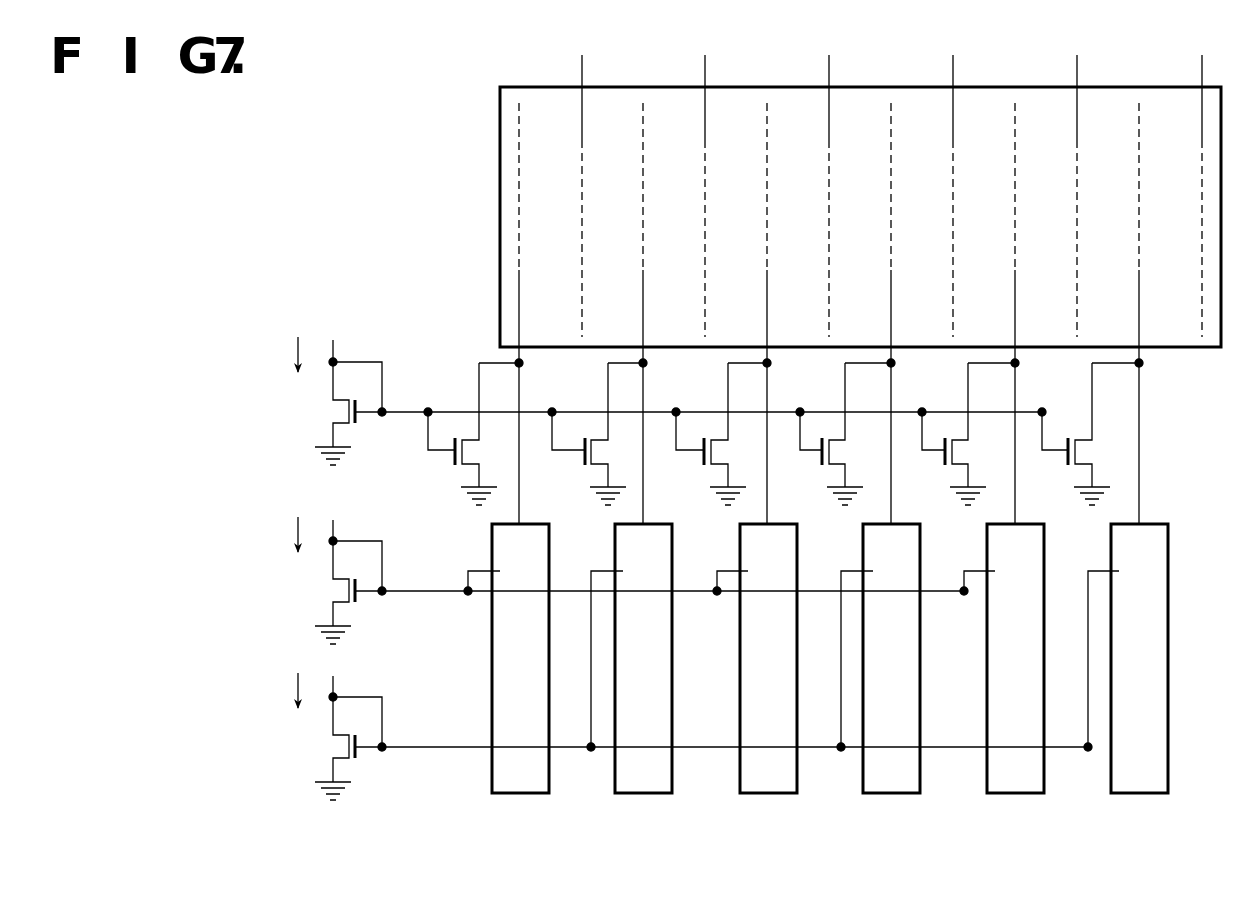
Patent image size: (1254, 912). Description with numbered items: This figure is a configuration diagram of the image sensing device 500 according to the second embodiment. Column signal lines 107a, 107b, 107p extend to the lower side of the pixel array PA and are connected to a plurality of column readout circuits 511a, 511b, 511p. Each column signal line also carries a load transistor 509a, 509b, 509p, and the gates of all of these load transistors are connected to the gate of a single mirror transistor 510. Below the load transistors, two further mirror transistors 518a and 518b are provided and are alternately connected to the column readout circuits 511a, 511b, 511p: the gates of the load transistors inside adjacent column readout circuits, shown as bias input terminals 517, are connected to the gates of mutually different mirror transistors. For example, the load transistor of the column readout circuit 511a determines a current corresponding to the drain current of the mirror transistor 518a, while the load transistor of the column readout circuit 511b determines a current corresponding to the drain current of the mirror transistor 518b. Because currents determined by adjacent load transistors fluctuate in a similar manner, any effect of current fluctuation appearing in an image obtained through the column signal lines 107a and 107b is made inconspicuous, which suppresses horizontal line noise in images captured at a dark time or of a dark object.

The pixel array PA is at (1142, 80).
The image sensing device 500 is at (432, 828).
The column signal line 107a is at (553, 293).
The column signal line 107b is at (677, 293).
The column signal line 107p is at (1173, 293).
The load transistor 509a is at (452, 462).
The load transistor 509b is at (582, 462).
The load transistor 509p is at (1062, 462).
The mirror transistor 510 is at (356, 425).
The column readout circuit 511a is at (522, 796).
The column readout circuit 511b is at (647, 796).
The column readout circuit 511p is at (1143, 796).
The bias input terminal 517 is at (522, 560).
The mirror transistor 518a is at (356, 604).
The mirror transistor 518b is at (380, 773).